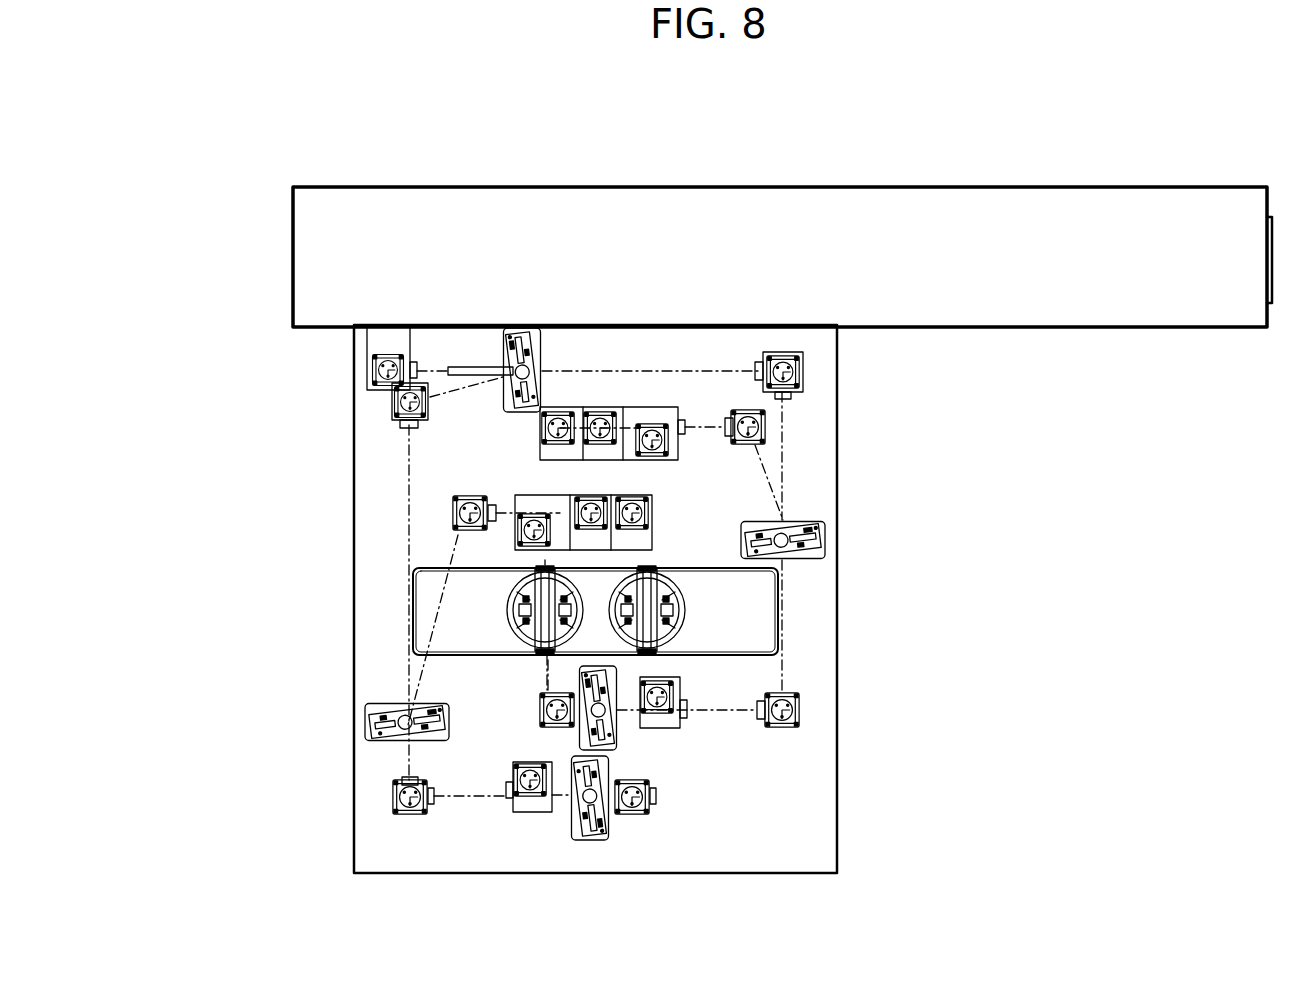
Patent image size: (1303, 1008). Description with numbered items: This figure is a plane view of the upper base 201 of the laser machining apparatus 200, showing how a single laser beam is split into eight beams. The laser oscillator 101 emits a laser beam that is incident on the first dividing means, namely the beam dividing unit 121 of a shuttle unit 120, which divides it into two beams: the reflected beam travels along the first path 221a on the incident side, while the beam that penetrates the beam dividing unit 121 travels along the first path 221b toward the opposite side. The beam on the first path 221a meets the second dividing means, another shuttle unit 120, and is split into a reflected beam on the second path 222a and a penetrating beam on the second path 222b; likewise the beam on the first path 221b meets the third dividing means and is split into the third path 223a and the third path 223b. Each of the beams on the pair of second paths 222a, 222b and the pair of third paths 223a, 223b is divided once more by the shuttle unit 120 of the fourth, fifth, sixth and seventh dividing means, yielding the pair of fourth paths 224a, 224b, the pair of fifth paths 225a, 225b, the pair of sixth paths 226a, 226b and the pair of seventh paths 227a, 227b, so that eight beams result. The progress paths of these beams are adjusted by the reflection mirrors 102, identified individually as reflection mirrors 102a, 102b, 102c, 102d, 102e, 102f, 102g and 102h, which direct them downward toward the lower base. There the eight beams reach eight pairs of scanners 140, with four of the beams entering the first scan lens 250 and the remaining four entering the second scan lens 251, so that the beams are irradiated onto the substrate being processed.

The laser oscillator 101 is at (360, 188).
The reflection mirror 102 is at (376, 371).
The reflection mirror 102a is at (518, 530).
The reflection mirror 102b is at (650, 513).
The reflection mirror 102c is at (528, 798).
The reflection mirror 102d is at (645, 812).
The reflection mirror 102e is at (654, 438).
The reflection mirror 102f is at (558, 425).
The reflection mirror 102g is at (802, 710).
The reflection mirror 102h is at (548, 710).
The shuttle unit 120 is at (516, 348).
The beam dividing unit 121 is at (600, 455).
The scanner 140 is at (520, 625).
The laser machining apparatus 200 is at (242, 768).
The upper base 201 is at (376, 856).
The first scan lens 250 is at (425, 578).
The second scan lens 251 is at (693, 592).
The first path 221a is at (462, 392).
The first path 221b is at (718, 371).
The second path 222a is at (438, 609).
The second path 222b is at (466, 800).
The third path 223a is at (750, 450).
The third path 223b is at (783, 670).
The fourth path 224a is at (587, 570).
The fourth path 224b is at (618, 552).
The fifth path 225a is at (558, 790).
The fifth path 225b is at (617, 817).
The sixth path 226a is at (634, 427).
The sixth path 226b is at (585, 426).
The seventh path 227a is at (627, 693).
The seventh path 227b is at (598, 668).